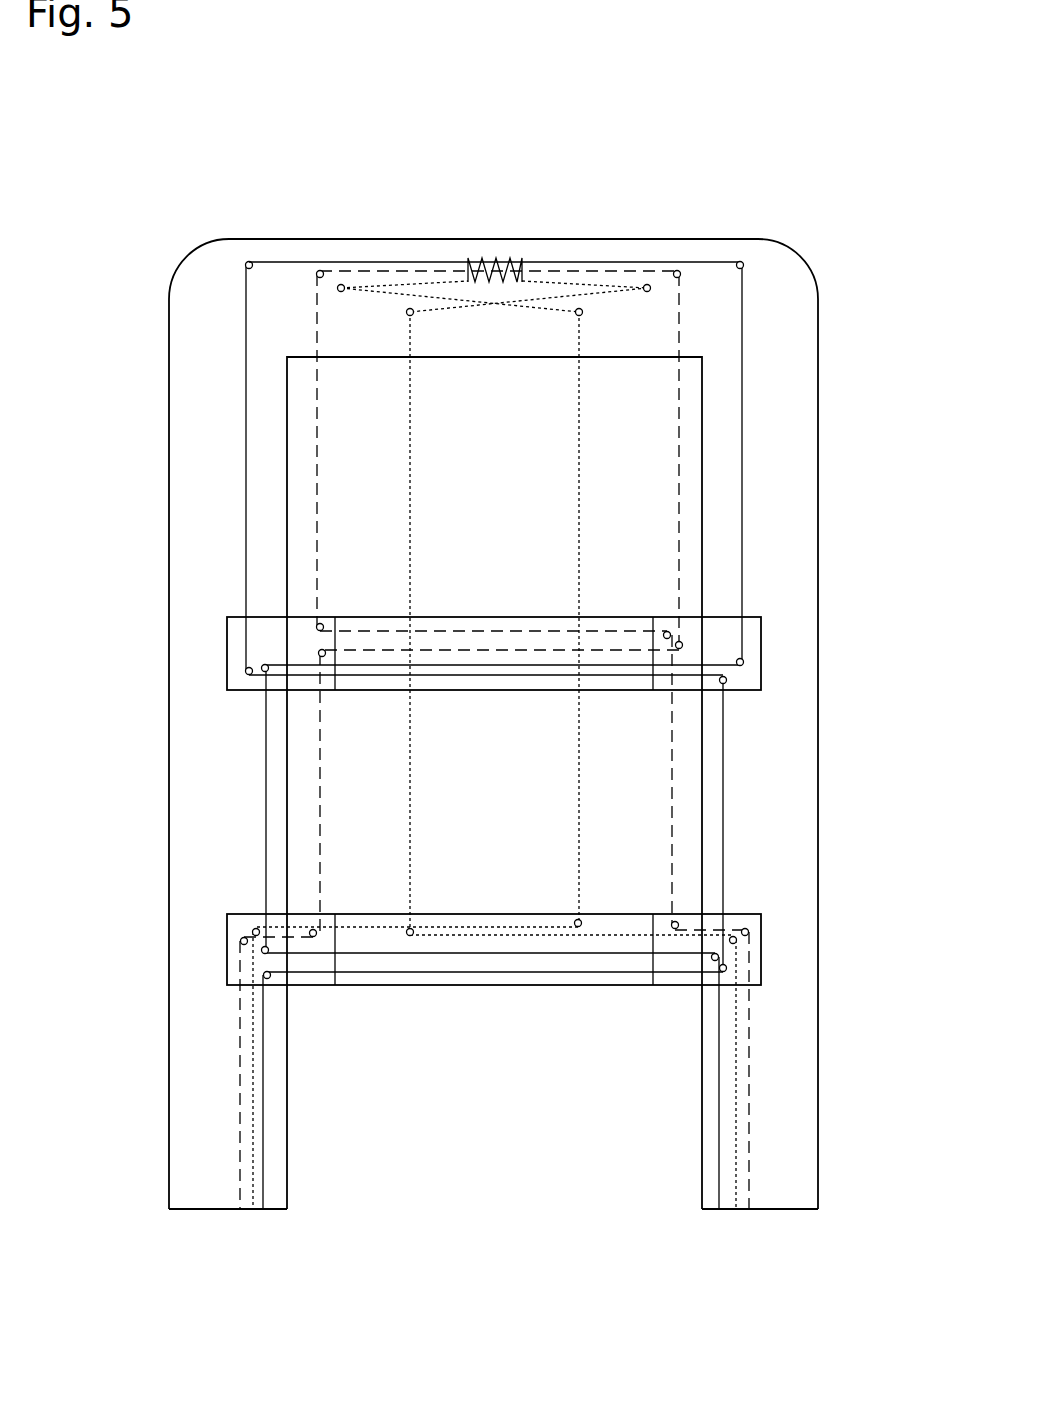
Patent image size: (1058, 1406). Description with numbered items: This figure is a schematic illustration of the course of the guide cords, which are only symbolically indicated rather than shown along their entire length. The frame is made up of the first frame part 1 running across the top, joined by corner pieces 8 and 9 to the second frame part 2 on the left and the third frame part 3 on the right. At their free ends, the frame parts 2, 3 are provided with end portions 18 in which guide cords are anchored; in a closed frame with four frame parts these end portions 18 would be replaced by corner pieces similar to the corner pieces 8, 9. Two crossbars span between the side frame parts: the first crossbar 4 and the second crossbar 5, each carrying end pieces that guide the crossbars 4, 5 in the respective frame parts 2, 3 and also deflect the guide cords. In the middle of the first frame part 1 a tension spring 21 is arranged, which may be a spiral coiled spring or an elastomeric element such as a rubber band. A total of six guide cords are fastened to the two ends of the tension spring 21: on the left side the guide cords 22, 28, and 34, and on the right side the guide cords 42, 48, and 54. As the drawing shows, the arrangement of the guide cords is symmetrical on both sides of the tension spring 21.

The first frame part 1 is at (499, 707).
The second frame part 2 is at (190, 748).
The third frame part 3 is at (800, 760).
The first crossbar 4 is at (469, 617).
The second crossbar 5 is at (466, 914).
The corner piece 8 is at (188, 283).
The corner piece 9 is at (780, 283).
The end portion 18 is at (190, 1212).
The tension spring 21 is at (490, 262).
The guide cord 22 is at (246, 418).
The guide cord 28 is at (317, 540).
The guide cord 34 is at (579, 594).
The guide cord 42 is at (742, 418).
The guide cord 48 is at (680, 525).
The guide cord 54 is at (410, 594).